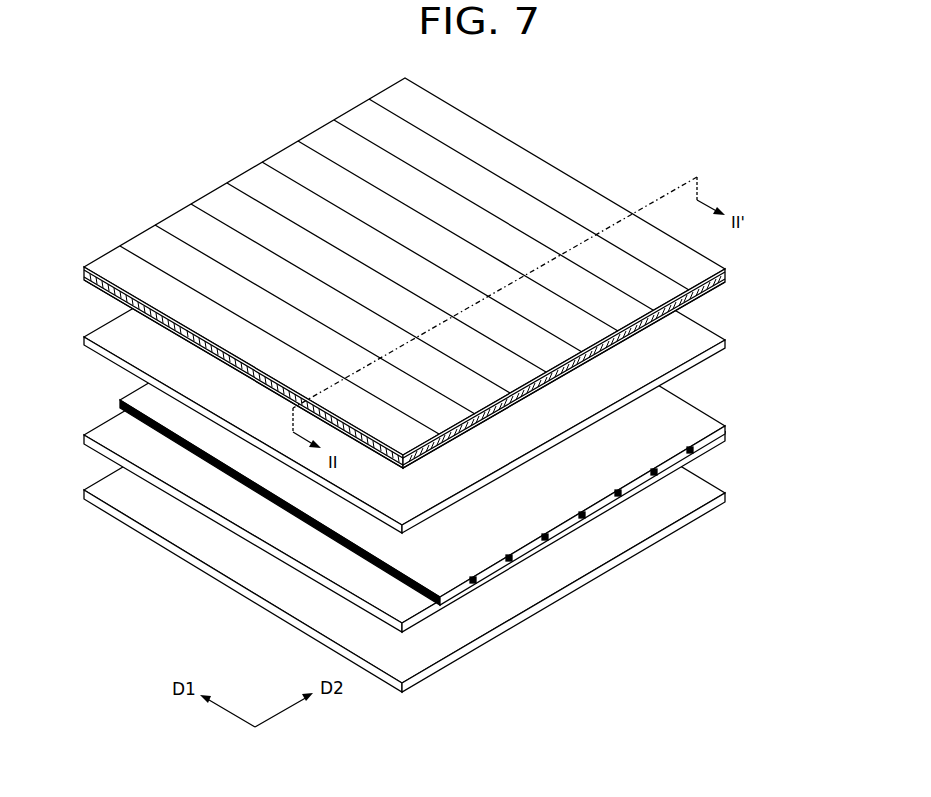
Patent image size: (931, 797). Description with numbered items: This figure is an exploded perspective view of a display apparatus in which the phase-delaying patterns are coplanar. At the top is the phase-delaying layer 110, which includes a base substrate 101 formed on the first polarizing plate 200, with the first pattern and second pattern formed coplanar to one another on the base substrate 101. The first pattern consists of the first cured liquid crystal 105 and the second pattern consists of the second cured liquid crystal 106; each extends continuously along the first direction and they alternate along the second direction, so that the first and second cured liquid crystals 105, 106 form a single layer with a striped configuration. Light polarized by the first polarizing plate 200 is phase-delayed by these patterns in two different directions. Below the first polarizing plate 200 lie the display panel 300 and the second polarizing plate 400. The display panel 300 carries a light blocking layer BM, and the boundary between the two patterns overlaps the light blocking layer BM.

The phase-delaying layer 110 is at (463, 273).
The second cured liquid crystal 106 is at (673, 297).
The first cured liquid crystal 105 is at (727, 275).
The base substrate 101 is at (727, 284).
The first polarizing plate 200 is at (727, 341).
The display panel 300 is at (460, 431).
The light blocking layer BM is at (727, 430).
The second polarizing plate 400 is at (727, 494).